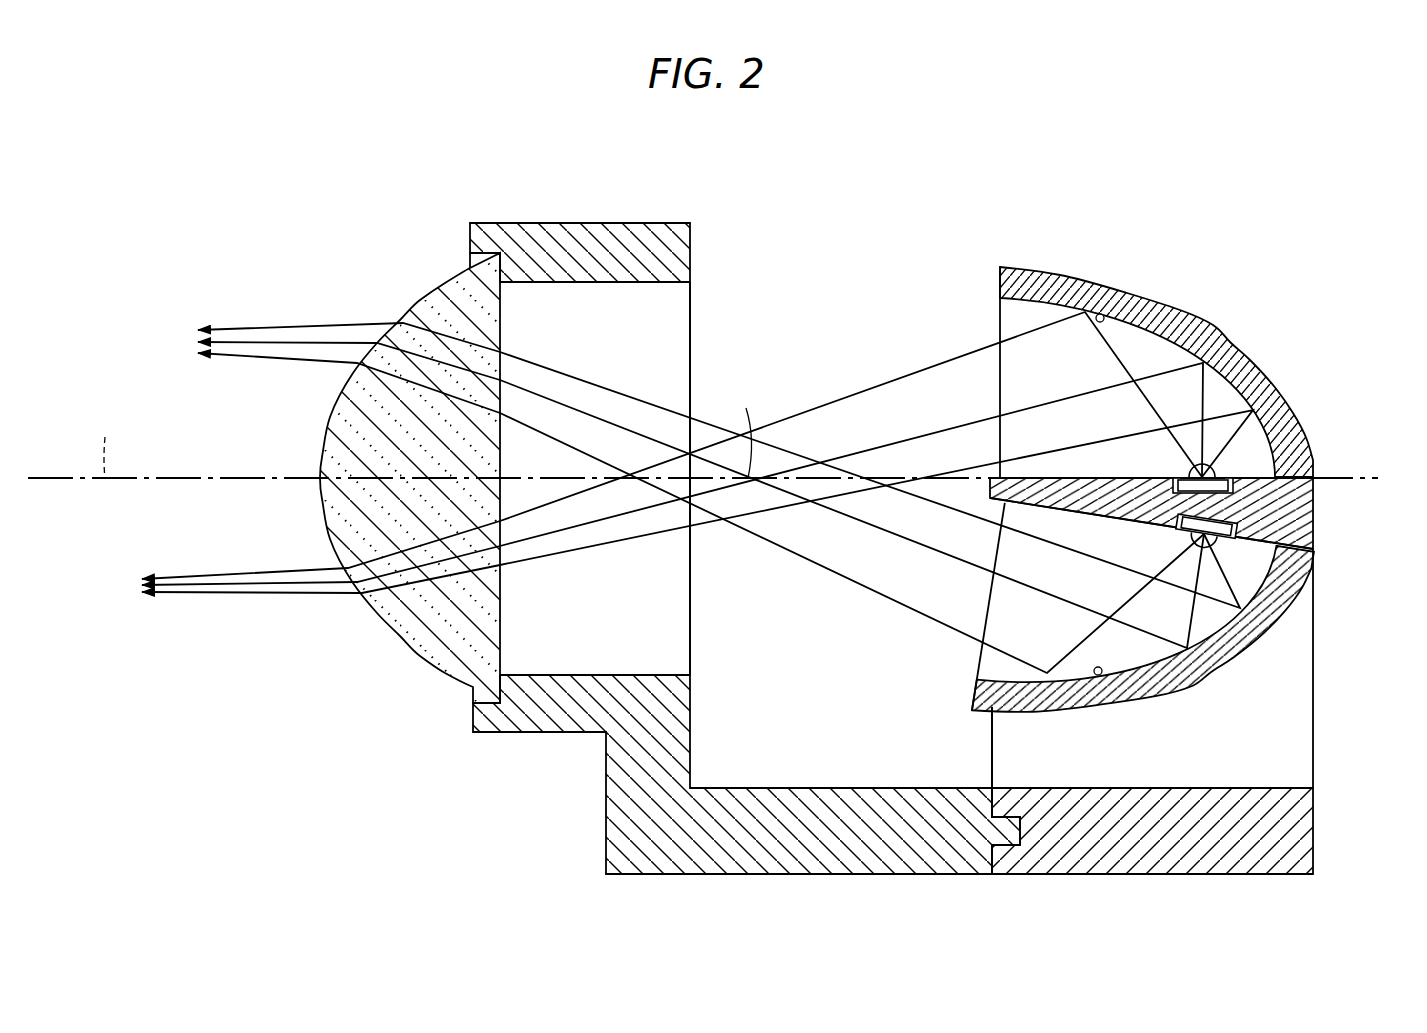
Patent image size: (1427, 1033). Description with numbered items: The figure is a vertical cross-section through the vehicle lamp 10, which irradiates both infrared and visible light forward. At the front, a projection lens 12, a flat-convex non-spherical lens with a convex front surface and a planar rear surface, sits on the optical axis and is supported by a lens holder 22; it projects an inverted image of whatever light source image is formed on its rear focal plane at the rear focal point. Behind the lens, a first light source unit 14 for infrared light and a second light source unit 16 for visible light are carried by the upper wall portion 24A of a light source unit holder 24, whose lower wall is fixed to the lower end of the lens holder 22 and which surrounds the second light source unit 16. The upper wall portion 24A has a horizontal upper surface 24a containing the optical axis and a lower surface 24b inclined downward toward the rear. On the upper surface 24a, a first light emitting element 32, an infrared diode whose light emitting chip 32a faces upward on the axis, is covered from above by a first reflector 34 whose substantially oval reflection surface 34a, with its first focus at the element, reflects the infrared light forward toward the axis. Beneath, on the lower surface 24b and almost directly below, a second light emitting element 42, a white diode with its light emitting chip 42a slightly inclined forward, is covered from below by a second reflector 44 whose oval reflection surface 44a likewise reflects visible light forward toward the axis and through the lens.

The vehicle lamp 10 is at (210, 195).
The projection lens 12 is at (418, 294).
The first light source unit 14 is at (1158, 464).
The second light source unit 16 is at (898, 660).
The lens holder 22 is at (518, 217).
The light source unit holder 24 is at (984, 737).
The upper wall portion 24A is at (1189, 497).
The upper surface 24a is at (1052, 477).
The lower surface 24b is at (1052, 509).
The first light emitting element 32 is at (1231, 439).
The light emitting chip 32a is at (1215, 466).
The first reflector 34 is at (1156, 356).
The reflection surface 34a is at (1100, 314).
The second light emitting element 42 is at (1238, 574).
The light emitting chip 42a is at (1290, 566).
The second reflector 44 is at (1170, 631).
The reflection surface 44a is at (1098, 676).